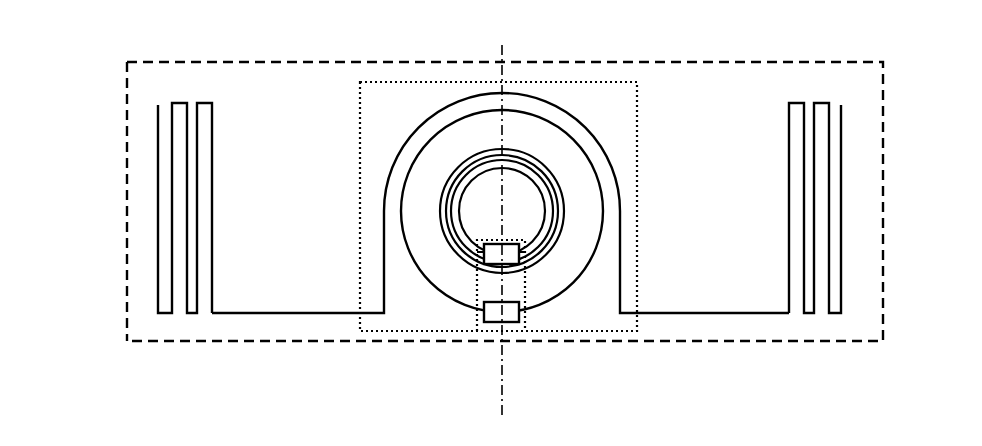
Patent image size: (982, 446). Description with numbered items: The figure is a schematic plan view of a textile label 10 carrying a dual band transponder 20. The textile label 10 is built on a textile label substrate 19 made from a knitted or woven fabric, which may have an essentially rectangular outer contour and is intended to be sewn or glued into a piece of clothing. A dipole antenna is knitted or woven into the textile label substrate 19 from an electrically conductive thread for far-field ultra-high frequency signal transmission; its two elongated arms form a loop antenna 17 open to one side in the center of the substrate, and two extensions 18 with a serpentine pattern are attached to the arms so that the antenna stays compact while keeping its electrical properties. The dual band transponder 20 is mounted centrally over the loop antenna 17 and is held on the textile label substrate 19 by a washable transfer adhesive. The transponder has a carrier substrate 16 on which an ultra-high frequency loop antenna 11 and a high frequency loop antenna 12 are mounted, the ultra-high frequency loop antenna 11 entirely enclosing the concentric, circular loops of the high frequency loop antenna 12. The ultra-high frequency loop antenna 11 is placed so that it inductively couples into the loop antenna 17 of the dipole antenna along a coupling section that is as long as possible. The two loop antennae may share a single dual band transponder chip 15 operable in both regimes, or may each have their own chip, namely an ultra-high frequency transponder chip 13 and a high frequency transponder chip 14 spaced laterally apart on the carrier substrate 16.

The textile label 10 is at (479, 226).
The ultra-high frequency loop antenna 11 is at (632, 158).
The high frequency loop antenna 12 is at (557, 214).
The ultra-high frequency transponder chip 13 is at (514, 322).
The high frequency transponder chip 14 is at (484, 252).
The dual band transponder chip 15 is at (481, 331).
The carrier substrate 16 is at (385, 331).
The loop antenna 17 is at (405, 132).
The extensions 18 is at (180, 318).
The textile label substrate 19 is at (127, 178).
The dual band transponder 20 is at (600, 347).